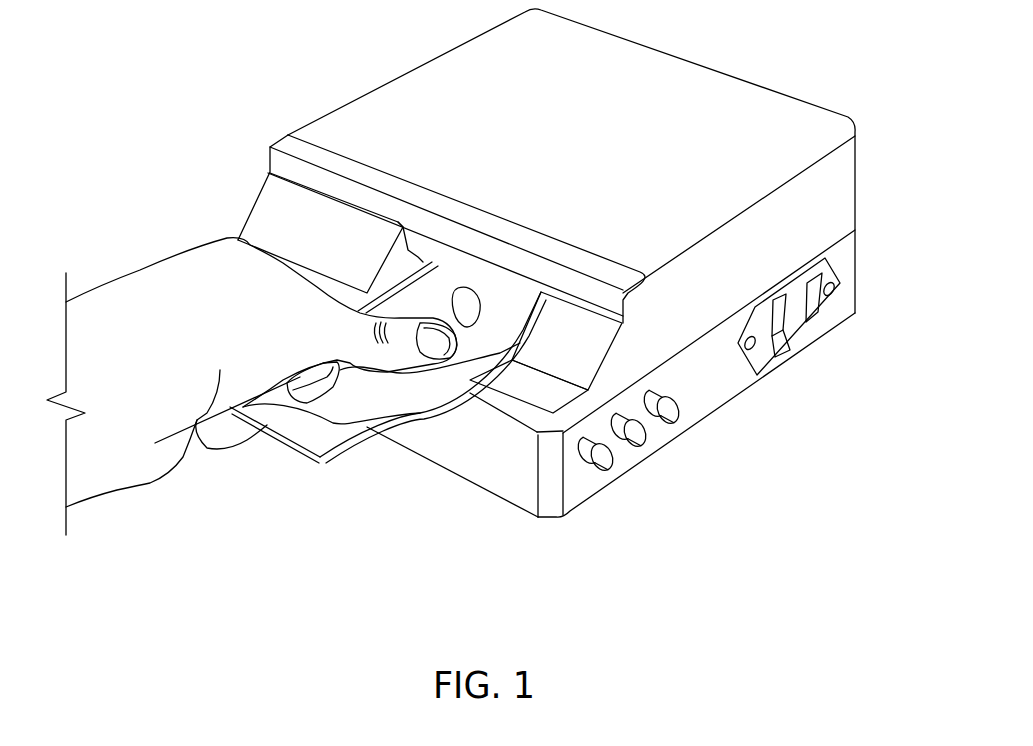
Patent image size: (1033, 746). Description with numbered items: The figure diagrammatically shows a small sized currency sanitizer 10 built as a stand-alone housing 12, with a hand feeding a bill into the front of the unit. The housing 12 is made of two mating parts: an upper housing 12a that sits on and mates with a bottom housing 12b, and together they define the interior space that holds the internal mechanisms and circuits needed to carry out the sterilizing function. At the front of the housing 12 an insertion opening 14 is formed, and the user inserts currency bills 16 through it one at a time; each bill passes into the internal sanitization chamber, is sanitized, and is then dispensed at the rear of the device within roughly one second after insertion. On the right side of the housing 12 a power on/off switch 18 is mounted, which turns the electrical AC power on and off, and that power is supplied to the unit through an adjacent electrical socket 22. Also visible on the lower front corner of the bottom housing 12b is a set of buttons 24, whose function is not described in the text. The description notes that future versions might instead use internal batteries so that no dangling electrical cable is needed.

The currency sanitizer 10 is at (589, 270).
The housing 12 is at (665, 73).
The upper housing 12a is at (845, 160).
The bottom housing 12b is at (840, 262).
The insertion opening 14 is at (550, 376).
The currency bills 16 is at (317, 428).
The power on/off switch 18 is at (785, 348).
The electrical socket 22 is at (827, 308).
The control buttons 24 is at (622, 462).